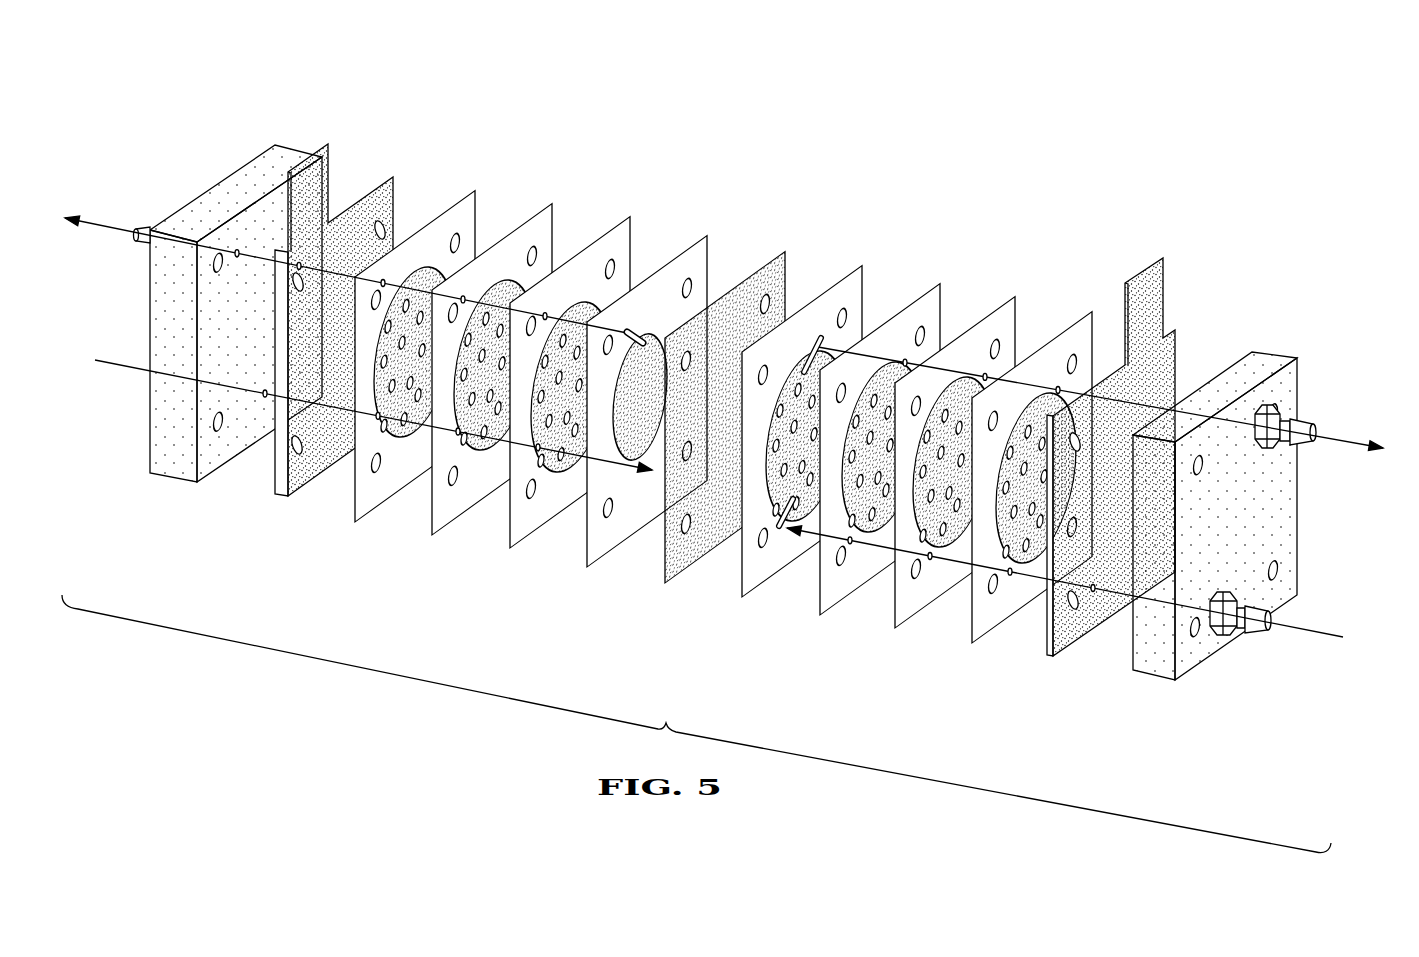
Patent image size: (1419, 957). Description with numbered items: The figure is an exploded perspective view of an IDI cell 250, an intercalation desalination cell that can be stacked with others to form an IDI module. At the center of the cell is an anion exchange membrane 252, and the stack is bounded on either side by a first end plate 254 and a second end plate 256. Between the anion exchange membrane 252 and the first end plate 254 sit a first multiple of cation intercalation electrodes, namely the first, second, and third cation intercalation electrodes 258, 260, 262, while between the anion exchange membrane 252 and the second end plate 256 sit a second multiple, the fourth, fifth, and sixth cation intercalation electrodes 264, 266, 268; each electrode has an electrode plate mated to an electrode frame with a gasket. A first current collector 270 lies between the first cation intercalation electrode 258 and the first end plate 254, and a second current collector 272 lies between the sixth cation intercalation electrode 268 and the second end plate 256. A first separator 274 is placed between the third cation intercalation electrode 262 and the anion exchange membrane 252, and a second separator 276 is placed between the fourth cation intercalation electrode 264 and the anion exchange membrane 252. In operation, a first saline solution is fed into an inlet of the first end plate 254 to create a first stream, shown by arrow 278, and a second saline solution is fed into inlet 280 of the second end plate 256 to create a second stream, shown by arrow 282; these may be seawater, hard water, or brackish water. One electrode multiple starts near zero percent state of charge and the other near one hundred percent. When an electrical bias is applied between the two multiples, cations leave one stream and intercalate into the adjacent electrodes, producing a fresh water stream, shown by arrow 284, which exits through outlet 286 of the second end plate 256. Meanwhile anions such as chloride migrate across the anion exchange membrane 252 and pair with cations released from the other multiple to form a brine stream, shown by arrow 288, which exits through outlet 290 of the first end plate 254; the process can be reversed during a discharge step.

The IDI cell 250 is at (368, 557).
The anion exchange membrane 252 is at (765, 265).
The first end plate 254 is at (275, 163).
The second end plate 256 is at (1258, 362).
The first cation intercalation electrode 258 is at (457, 198).
The second cation intercalation electrode 260 is at (540, 210).
The third cation intercalation electrode 262 is at (608, 230).
The fourth cation intercalation electrode 264 is at (918, 292).
The fifth cation intercalation electrode 266 is at (995, 308).
The sixth cation intercalation electrode 268 is at (1063, 330).
The first current collector 270 is at (327, 143).
The second current collector 272 is at (1163, 258).
The first separator 274 is at (687, 247).
The second separator 276 is at (840, 280).
The arrow 278 is at (122, 372).
The inlet 280 is at (1257, 632).
The arrow 282 is at (1310, 626).
The arrow 284 is at (1348, 440).
The outlet 286 is at (1305, 420).
The arrow 288 is at (122, 237).
The outlet 290 is at (147, 227).